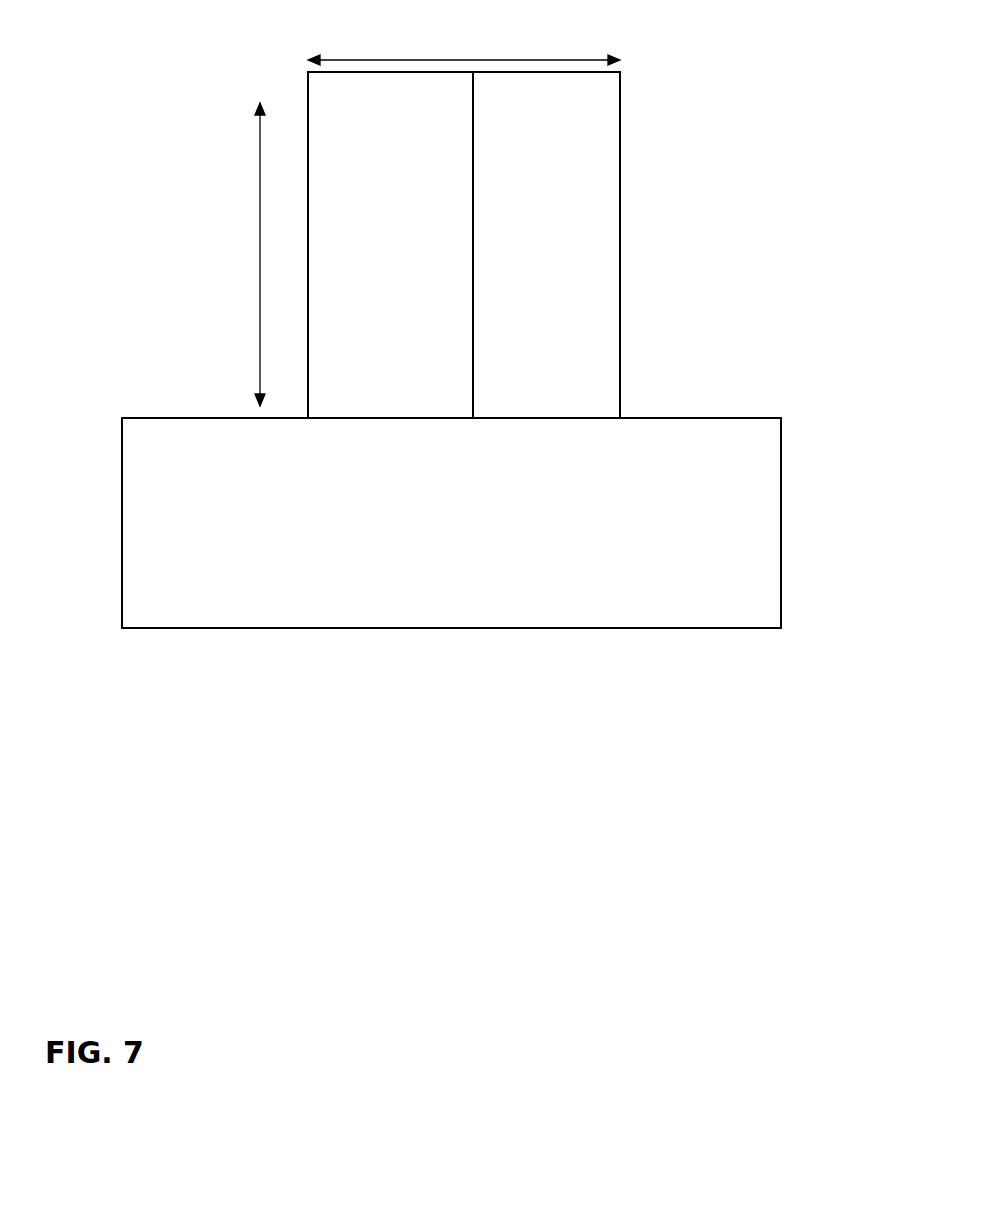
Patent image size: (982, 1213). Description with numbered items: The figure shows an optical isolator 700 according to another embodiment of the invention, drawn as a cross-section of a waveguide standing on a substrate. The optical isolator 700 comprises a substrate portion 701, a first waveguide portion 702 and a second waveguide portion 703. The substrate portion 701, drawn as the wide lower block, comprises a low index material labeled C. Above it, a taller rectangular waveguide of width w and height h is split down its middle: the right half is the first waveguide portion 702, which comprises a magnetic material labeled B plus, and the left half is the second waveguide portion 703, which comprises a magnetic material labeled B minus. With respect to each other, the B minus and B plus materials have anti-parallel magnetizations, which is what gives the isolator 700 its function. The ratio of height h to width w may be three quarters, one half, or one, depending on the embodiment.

The optical isolator 700 is at (493, 776).
The substrate portion 701 is at (795, 538).
The first waveguide portion 702 is at (658, 347).
The second waveguide portion 703 is at (300, 83).